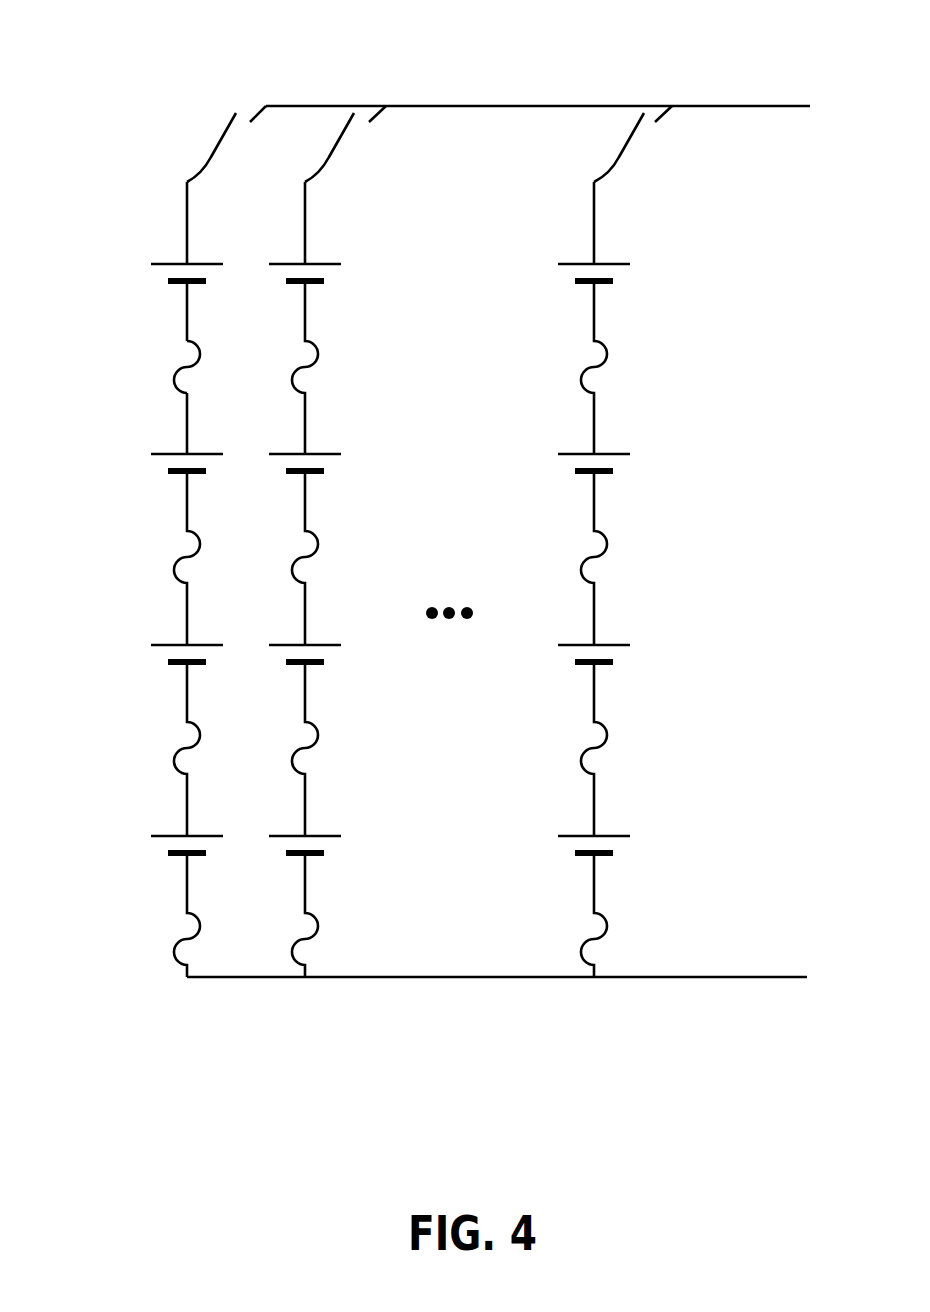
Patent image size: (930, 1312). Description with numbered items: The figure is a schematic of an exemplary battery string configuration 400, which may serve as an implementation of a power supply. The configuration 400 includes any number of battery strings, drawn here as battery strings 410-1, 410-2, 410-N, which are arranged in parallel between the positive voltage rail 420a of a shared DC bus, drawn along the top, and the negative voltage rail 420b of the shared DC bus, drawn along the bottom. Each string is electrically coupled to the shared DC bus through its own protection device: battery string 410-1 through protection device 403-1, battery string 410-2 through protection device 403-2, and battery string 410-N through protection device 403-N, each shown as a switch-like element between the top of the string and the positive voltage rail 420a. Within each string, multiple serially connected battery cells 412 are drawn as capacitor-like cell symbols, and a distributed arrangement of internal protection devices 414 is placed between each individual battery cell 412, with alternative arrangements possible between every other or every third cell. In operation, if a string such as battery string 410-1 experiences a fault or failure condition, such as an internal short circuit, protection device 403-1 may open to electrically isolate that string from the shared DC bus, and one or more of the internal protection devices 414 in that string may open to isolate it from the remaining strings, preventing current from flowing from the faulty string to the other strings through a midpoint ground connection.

The battery string configuration 400 is at (709, 26).
The positive voltage rail 420a is at (608, 104).
The negative voltage rail 420b is at (731, 973).
The protection device 403-1 is at (215, 128).
The protection device 403-2 is at (335, 128).
The protection device 403-N is at (625, 128).
The battery string 410-1 is at (129, 579).
The battery string 410-2 is at (276, 557).
The battery string 410-N is at (648, 555).
The battery cell 412 is at (147, 258).
The internal protection device 414 is at (167, 366).